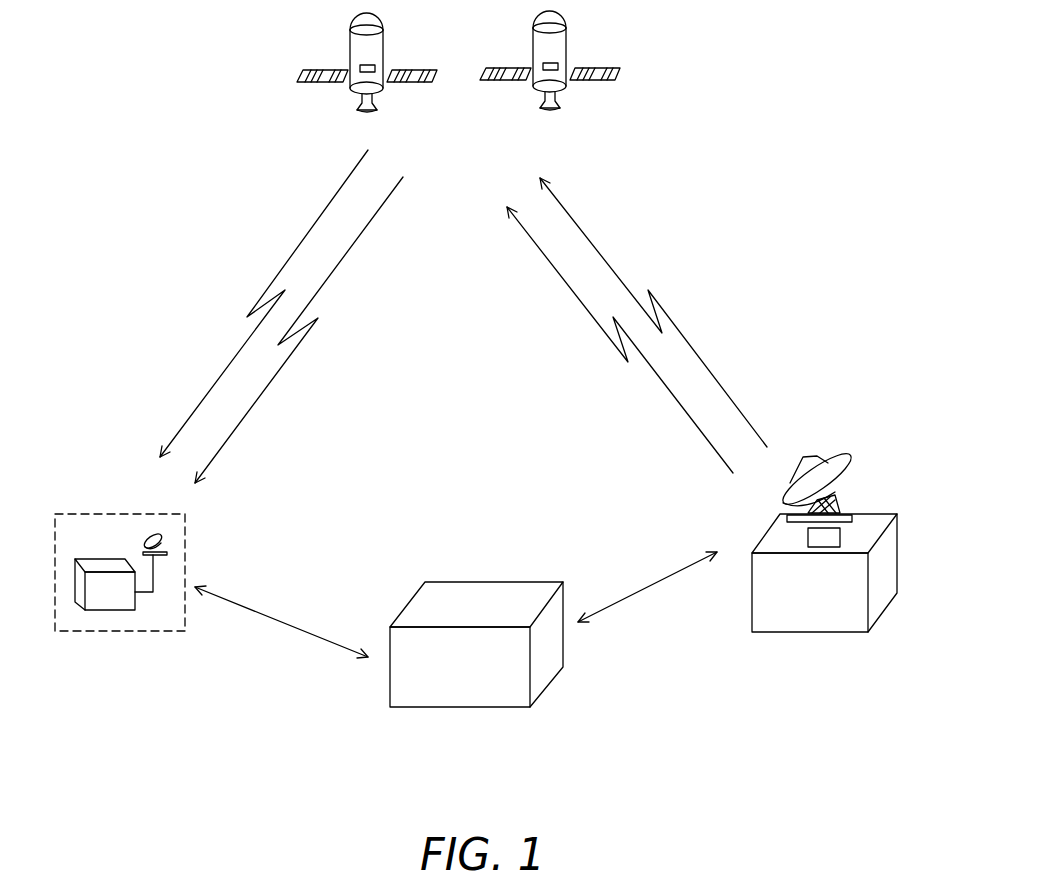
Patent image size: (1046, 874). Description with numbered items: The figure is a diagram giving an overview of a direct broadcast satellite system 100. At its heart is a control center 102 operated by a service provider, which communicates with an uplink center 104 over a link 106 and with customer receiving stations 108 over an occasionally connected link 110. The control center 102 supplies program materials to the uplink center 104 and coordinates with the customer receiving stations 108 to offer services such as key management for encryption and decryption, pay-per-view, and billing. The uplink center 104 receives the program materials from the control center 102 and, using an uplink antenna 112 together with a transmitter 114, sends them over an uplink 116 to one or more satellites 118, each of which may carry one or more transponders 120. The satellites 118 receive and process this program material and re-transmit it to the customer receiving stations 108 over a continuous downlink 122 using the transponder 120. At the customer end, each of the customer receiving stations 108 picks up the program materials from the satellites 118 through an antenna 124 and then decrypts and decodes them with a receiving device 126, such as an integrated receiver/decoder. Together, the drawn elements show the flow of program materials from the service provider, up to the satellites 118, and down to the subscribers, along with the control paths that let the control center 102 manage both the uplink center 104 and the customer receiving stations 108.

The direct broadcast satellite system 100 is at (840, 187).
The control center 102 is at (537, 693).
The uplink center 104 is at (817, 633).
The link 106 is at (643, 588).
The customer receiving stations 108 is at (185, 565).
The occasionally connected link 110 is at (277, 620).
The uplink antenna 112 is at (853, 463).
The transmitter 114 is at (840, 535).
The uplink 116 is at (693, 352).
The satellites 118 is at (408, 82).
The transponders 120 is at (370, 60).
The continuous downlink 122 is at (343, 258).
The antenna 124 is at (157, 532).
The receiving device 126 is at (108, 610).